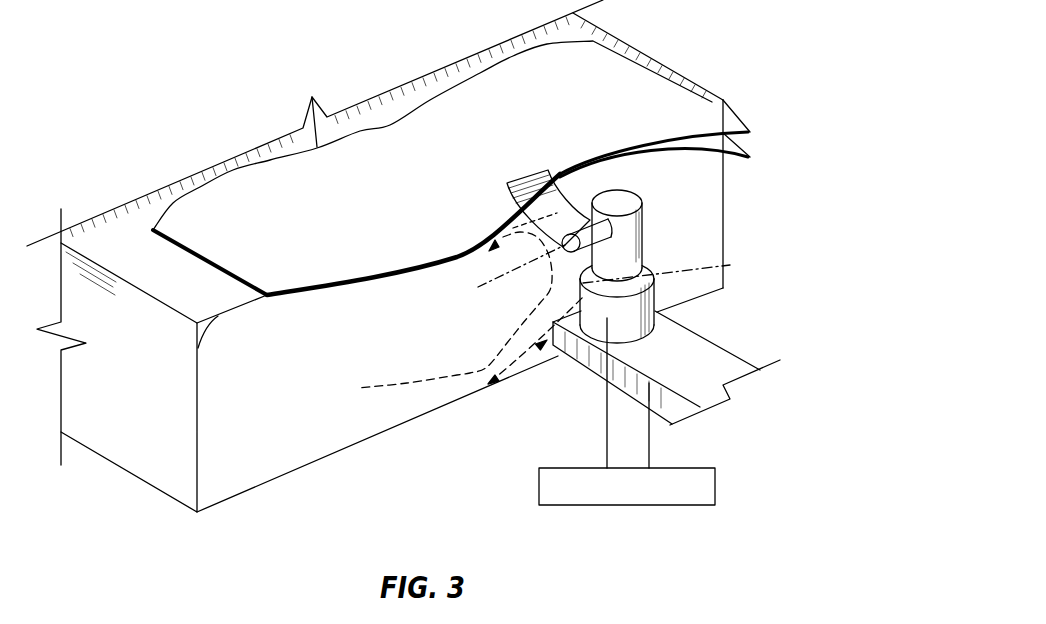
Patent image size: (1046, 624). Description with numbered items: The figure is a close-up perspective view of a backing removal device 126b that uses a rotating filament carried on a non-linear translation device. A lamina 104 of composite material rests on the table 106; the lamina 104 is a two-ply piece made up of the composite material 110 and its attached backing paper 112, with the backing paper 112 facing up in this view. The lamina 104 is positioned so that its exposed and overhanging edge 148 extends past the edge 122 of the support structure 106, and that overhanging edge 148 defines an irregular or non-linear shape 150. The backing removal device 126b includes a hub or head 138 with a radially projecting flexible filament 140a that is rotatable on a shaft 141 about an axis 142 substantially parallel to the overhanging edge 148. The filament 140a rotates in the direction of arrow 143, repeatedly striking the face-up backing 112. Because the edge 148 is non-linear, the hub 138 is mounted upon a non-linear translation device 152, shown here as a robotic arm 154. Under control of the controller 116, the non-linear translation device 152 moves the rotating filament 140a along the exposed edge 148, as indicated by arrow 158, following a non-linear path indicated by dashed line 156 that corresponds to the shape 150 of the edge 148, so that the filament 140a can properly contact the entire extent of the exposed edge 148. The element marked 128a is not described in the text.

The lamina 104 is at (395, 150).
The table 106 is at (105, 228).
The composite material 110 is at (750, 150).
The backing paper 112 is at (688, 118).
The controller 116 is at (626, 505).
The edge of the support structure 122 is at (196, 349).
The backing removal device 126b is at (470, 440).
The end edge 128a is at (752, 227).
The hub 138 is at (628, 243).
The flexible filament 140a is at (528, 185).
The shaft 141 is at (585, 233).
The axis 142 is at (490, 280).
The arrow 143 is at (548, 280).
The exposed and overhanging edge 148 is at (280, 282).
The irregular shape 150 is at (278, 310).
The non-linear translation device 152 is at (725, 308).
The robotic arm 154 is at (727, 363).
The non-linear path 156 is at (400, 385).
The arrow 158 is at (520, 365).